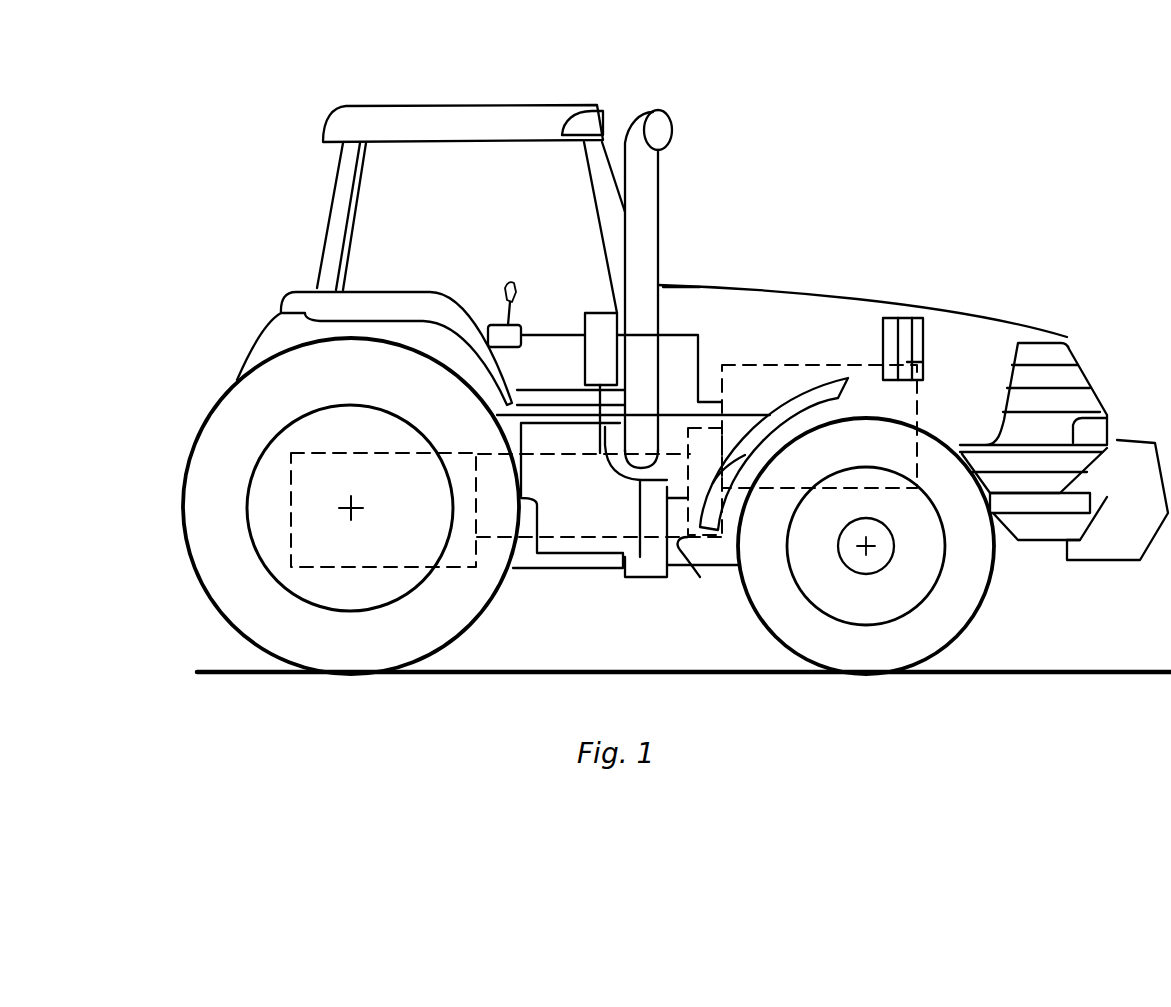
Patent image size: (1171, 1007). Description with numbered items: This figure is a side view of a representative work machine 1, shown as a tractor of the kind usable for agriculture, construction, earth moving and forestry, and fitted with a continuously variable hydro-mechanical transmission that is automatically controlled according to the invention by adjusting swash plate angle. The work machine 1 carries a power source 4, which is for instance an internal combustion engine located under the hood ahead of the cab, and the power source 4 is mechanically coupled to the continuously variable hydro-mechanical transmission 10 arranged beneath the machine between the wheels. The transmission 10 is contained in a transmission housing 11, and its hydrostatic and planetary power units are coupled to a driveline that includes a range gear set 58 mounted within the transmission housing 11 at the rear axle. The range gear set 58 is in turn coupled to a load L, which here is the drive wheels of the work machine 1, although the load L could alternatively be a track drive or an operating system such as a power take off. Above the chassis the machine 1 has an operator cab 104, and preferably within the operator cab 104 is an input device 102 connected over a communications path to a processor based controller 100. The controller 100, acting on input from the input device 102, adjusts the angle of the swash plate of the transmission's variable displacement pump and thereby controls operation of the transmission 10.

The work machine 1 is at (989, 212).
The power source 4 is at (810, 363).
The continuously variable hydro-mechanical transmission 10 is at (594, 553).
The transmission housing 11 is at (687, 565).
The range gear set 58 is at (373, 548).
The processor based controller 100 is at (595, 312).
The input device 102 is at (513, 280).
The operator cab 104 is at (483, 104).
The load L is at (200, 604).